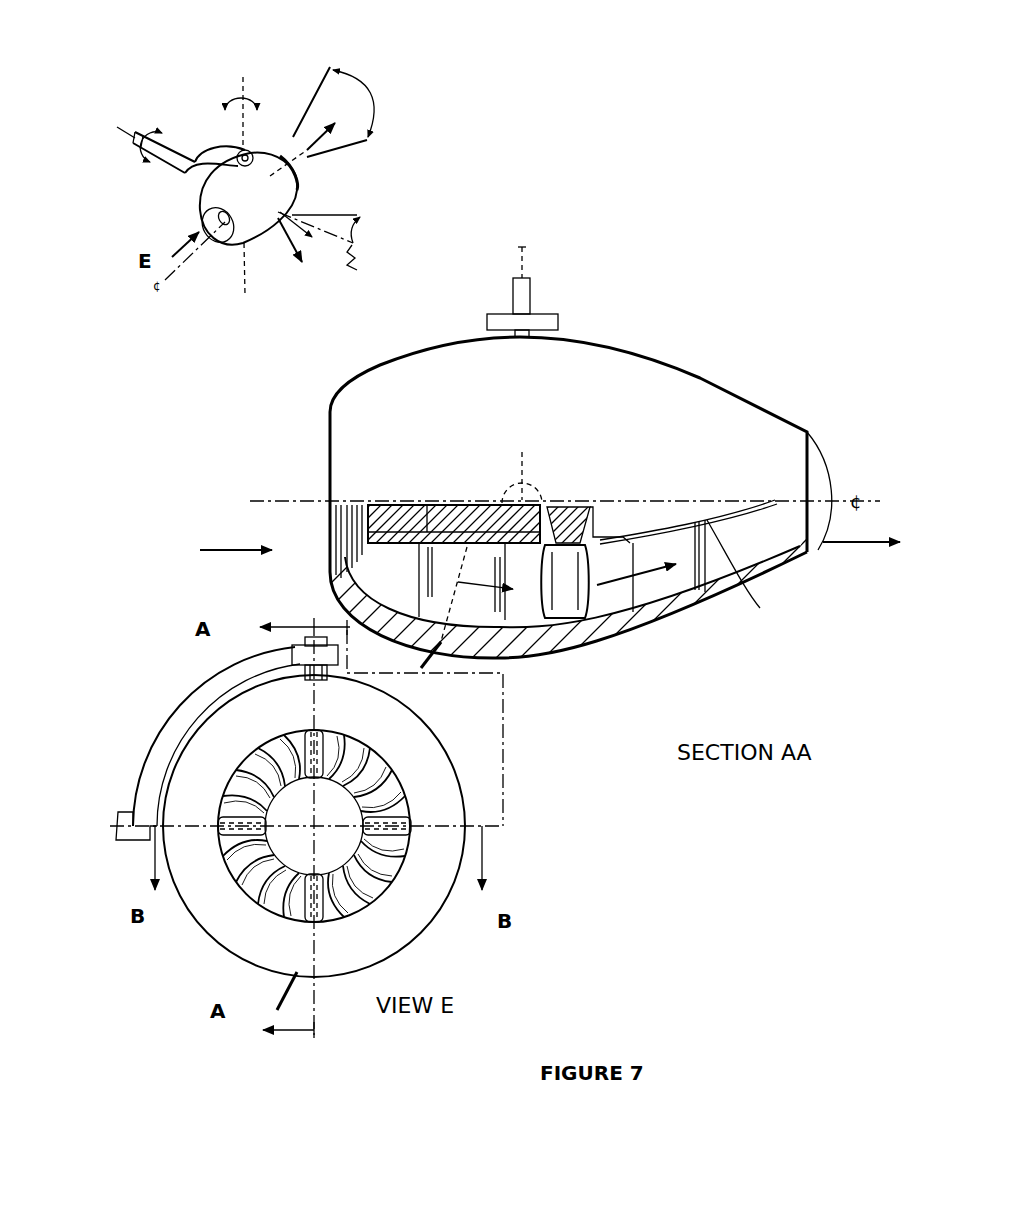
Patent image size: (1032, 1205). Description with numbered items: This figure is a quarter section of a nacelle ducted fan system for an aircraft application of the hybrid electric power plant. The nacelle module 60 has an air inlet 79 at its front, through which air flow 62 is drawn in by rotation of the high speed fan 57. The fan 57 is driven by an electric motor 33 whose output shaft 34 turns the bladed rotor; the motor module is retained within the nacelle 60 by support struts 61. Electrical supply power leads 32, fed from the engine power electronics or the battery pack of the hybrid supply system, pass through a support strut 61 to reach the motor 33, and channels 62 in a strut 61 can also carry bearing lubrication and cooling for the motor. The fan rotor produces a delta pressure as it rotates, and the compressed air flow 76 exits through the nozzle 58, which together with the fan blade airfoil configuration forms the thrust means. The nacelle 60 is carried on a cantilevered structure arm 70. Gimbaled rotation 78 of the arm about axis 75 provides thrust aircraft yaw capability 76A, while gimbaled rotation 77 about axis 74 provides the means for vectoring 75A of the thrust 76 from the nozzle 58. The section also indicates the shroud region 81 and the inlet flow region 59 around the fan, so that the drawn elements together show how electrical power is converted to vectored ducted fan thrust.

The electrical supply power leads 32 is at (448, 660).
The motor 33 is at (455, 503).
The output shaft 34 is at (560, 508).
The high speed fan 57 is at (625, 632).
The nozzle 58 is at (820, 552).
The inlet 59 is at (340, 547).
The nacelle module 60 is at (382, 388).
The support struts 61 is at (447, 572).
The air flow 62 is at (462, 595).
The cantilevered structure arm 70 is at (566, 320).
The axis 74 is at (530, 248).
The axis 75 is at (523, 500).
The thrust vectoring 75A is at (358, 222).
The compressed air flow / thrust 76 is at (838, 545).
The thrust yaw capability 76A is at (368, 96).
The gimbaled rotation 77 is at (228, 110).
The gimbaled rotation 78 is at (138, 156).
The air inlet 79 is at (213, 548).
The shroud 81 is at (750, 587).